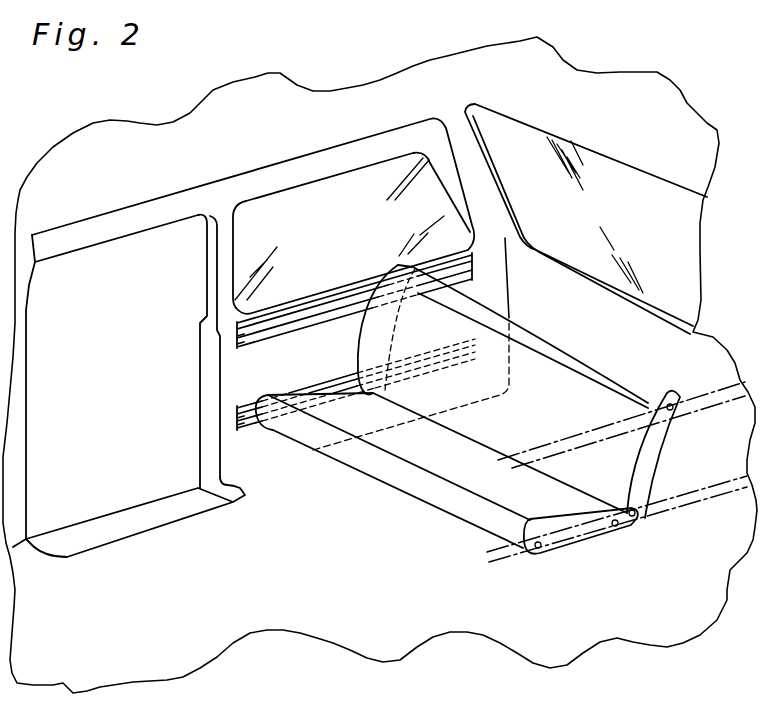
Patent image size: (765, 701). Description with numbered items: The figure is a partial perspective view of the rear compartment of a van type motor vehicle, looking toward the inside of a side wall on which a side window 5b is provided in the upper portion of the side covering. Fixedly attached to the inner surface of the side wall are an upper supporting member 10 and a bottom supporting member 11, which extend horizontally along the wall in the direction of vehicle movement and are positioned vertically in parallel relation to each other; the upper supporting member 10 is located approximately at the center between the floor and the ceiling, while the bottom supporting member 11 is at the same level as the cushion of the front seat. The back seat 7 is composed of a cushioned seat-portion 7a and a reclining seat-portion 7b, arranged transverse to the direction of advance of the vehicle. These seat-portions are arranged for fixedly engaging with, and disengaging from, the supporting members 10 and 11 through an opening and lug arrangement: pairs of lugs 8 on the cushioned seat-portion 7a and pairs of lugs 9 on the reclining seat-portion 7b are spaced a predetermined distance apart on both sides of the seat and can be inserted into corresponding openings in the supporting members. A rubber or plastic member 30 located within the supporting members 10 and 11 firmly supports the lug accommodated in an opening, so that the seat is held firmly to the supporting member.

The side window 5b is at (293, 207).
The upper supporting member 10 is at (313, 307).
The bottom supporting member 11 is at (252, 424).
The back seat 7 is at (435, 510).
The cushioned seat-portion 7a is at (392, 477).
The reclining seat-portion 7b is at (520, 367).
The lug 9 is at (671, 405).
The lug 8 is at (538, 548).
The rubber or plastic member 30 is at (230, 388).